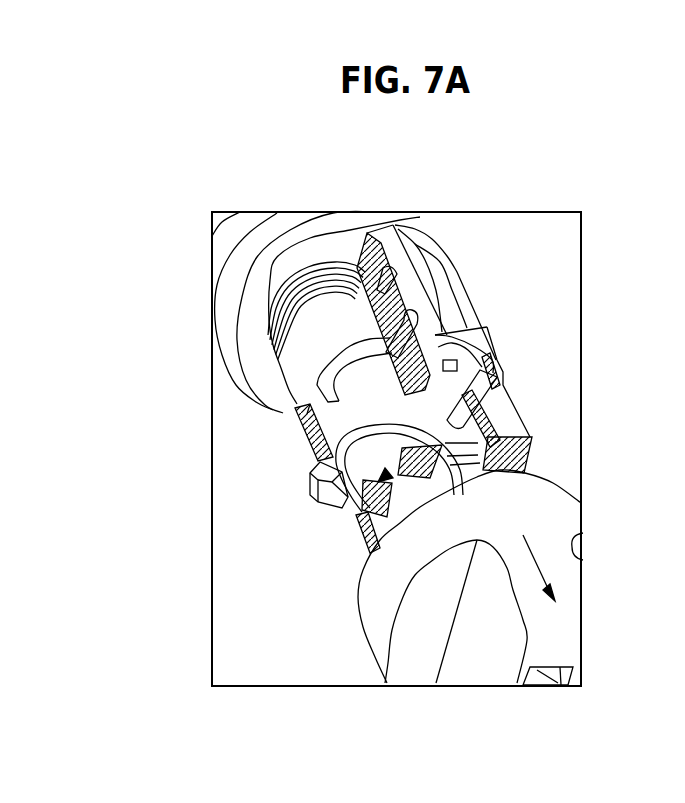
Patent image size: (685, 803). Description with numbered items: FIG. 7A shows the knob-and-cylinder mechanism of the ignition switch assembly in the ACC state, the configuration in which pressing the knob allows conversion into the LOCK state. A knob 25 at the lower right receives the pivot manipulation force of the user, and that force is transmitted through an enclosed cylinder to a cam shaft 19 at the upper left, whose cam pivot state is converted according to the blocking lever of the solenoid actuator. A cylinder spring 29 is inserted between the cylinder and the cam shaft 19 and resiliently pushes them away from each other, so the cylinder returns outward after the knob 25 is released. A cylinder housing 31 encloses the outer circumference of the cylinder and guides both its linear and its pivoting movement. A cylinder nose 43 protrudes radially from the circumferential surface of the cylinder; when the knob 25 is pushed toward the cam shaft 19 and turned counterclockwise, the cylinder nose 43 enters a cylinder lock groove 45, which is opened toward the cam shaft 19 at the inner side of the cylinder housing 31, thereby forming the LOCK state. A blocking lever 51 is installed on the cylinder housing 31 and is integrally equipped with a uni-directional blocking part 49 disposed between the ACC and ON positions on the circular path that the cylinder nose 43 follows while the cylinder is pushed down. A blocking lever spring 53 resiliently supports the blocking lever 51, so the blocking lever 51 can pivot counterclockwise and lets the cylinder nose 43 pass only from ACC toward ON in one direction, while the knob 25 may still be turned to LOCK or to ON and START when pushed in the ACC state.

The cam shaft 19 is at (268, 243).
The knob 25 is at (367, 612).
The cylinder spring 29 is at (262, 316).
The cylinder housing 31 is at (404, 288).
The cylinder nose 43 is at (310, 443).
The cylinder lock groove 45 is at (330, 478).
The uni-directional blocking part 49 is at (523, 460).
The blocking lever 51 is at (498, 377).
The blocking lever spring 53 is at (450, 340).